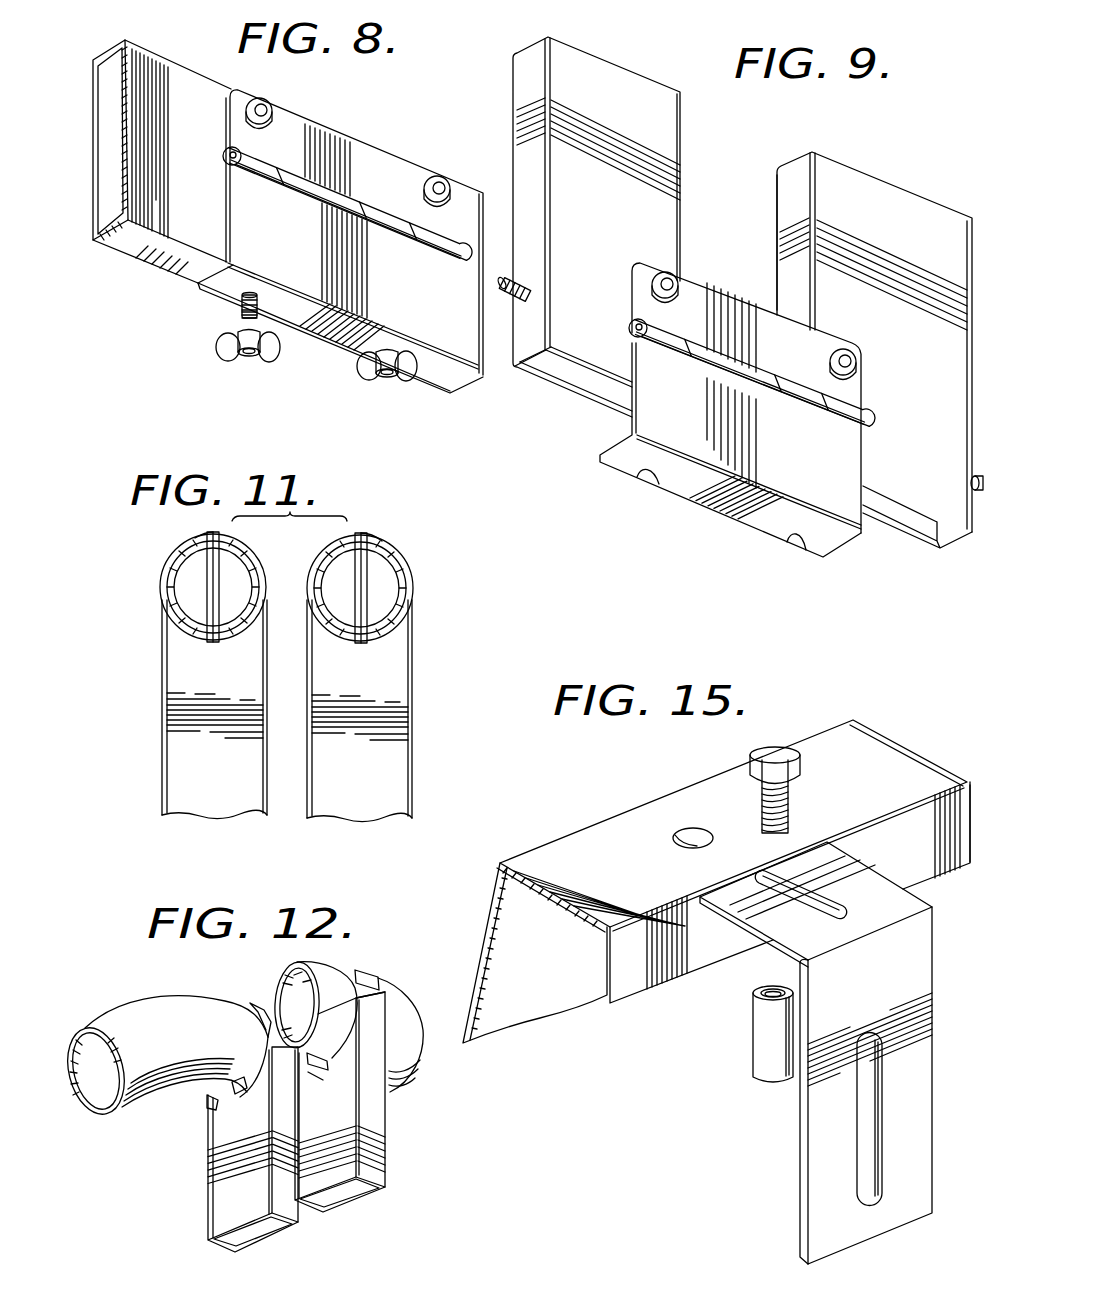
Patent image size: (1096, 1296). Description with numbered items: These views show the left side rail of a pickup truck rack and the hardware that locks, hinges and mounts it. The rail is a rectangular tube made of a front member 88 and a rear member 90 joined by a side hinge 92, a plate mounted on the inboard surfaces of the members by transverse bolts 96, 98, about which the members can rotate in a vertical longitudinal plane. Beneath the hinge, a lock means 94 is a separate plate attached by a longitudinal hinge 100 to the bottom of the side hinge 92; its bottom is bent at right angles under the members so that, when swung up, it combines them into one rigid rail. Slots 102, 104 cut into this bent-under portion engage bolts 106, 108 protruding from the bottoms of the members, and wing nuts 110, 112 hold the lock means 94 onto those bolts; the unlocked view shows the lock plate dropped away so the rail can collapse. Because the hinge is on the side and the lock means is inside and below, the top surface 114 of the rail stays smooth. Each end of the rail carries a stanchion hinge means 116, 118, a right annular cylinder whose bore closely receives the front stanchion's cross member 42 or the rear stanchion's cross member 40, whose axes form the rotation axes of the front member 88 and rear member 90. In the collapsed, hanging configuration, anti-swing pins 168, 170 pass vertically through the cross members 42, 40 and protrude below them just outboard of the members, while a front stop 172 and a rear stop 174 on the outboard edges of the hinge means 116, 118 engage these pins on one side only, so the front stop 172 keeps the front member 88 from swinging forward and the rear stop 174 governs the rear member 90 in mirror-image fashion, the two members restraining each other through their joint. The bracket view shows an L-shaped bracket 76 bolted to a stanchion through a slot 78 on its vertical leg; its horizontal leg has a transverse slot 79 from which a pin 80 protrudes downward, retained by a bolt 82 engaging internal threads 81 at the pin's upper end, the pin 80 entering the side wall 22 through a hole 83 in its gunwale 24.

In FIG. 15, the side wall 22 is at (492, 887).
In FIG. 15, the gunwale 24 is at (617, 822).
In FIG. 11, the cross member 40 is at (390, 561).
In FIG. 12, the cross member 40 is at (398, 998).
In FIG. 11, the cross member 42 is at (178, 560).
In FIG. 12, the cross member 42 is at (192, 1000).
In FIG. 15, the L-shaped bracket 76 is at (815, 1127).
In FIG. 15, the slot 78 is at (865, 1108).
In FIG. 15, the transverse slot 79 is at (842, 902).
In FIG. 15, the pin 80 is at (757, 1045).
In FIG. 15, the internal threads 81 is at (755, 1000).
In FIG. 15, the bolt 82 is at (802, 768).
In FIG. 15, the hole 83 is at (697, 829).
In FIG. 8, the front member 88 is at (452, 383).
In FIG. 9, the front member 88 is at (883, 181).
In FIG. 11, the front member 88 is at (227, 781).
In FIG. 12, the front member 88 is at (208, 1186).
In FIG. 8, the rear member 90 is at (151, 56).
In FIG. 9, the rear member 90 is at (605, 68).
In FIG. 11, the rear member 90 is at (365, 786).
In FIG. 12, the rear member 90 is at (385, 1157).
In FIG. 8, the side hinge 92 is at (324, 119).
In FIG. 9, the side hinge 92 is at (751, 290).
In FIG. 8, the lock means 94 is at (240, 222).
In FIG. 9, the lock means 94 is at (704, 518).
In FIG. 8, the transverse bolt 96 is at (445, 178).
In FIG. 9, the transverse bolt 96 is at (848, 349).
In FIG. 8, the transverse bolt 98 is at (270, 102).
In FIG. 9, the transverse bolt 98 is at (670, 273).
In FIG. 8, the longitudinal hinge 100 is at (245, 177).
In FIG. 9, the longitudinal hinge 100 is at (753, 369).
In FIG. 9, the slot 102 is at (796, 546).
In FIG. 8, the slot 104 is at (242, 300).
In FIG. 9, the slot 104 is at (642, 480).
In FIG. 8, the bolt 106 is at (383, 382).
In FIG. 9, the bolt 106 is at (971, 482).
In FIG. 8, the bolt 108 is at (240, 328).
In FIG. 9, the bolt 108 is at (523, 278).
In FIG. 8, the wing nut 110 is at (413, 380).
In FIG. 8, the wing nut 112 is at (243, 357).
In FIG. 9, the top surface 114 is at (777, 200).
In FIG. 11, the stanchion hinge means 116 is at (195, 538).
In FIG. 12, the stanchion hinge means 116 is at (256, 1002).
In FIG. 11, the stanchion hinge means 118 is at (373, 542).
In FIG. 12, the stanchion hinge means 118 is at (365, 977).
In FIG. 11, the anti-swing pin 168 is at (210, 615).
In FIG. 12, the anti-swing pin 168 is at (212, 1106).
In FIG. 11, the anti-swing pin 170 is at (367, 597).
In FIG. 12, the anti-swing pin 170 is at (318, 1067).
In FIG. 11, the front stop 172 is at (228, 645).
In FIG. 12, the front stop 172 is at (240, 1080).
In FIG. 11, the rear stop 174 is at (343, 643).
In FIG. 12, the rear stop 174 is at (308, 1085).